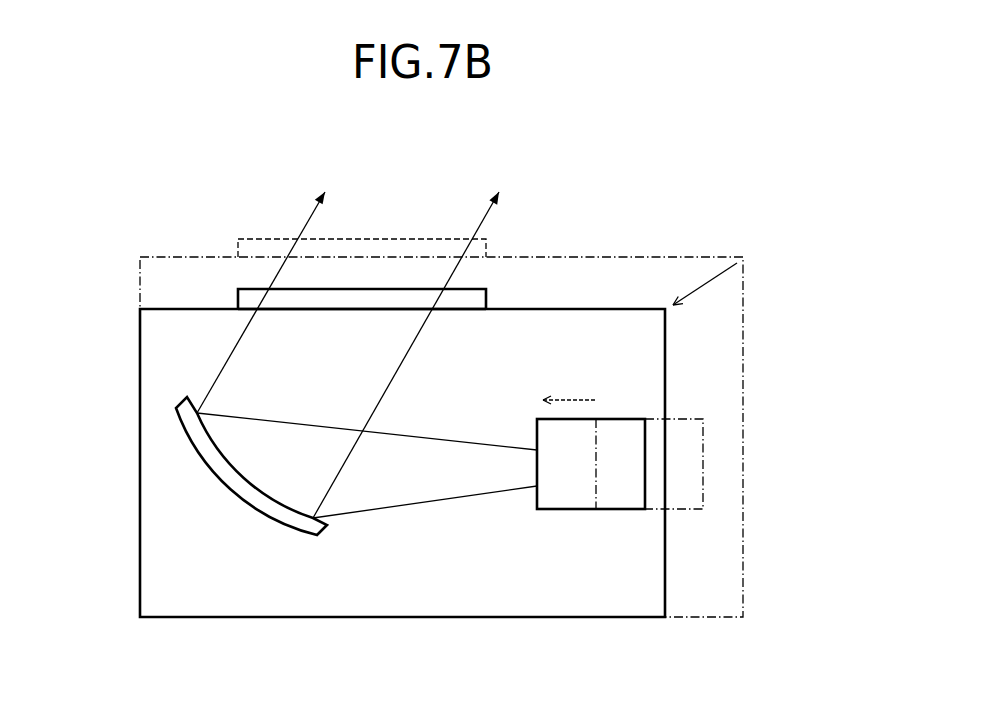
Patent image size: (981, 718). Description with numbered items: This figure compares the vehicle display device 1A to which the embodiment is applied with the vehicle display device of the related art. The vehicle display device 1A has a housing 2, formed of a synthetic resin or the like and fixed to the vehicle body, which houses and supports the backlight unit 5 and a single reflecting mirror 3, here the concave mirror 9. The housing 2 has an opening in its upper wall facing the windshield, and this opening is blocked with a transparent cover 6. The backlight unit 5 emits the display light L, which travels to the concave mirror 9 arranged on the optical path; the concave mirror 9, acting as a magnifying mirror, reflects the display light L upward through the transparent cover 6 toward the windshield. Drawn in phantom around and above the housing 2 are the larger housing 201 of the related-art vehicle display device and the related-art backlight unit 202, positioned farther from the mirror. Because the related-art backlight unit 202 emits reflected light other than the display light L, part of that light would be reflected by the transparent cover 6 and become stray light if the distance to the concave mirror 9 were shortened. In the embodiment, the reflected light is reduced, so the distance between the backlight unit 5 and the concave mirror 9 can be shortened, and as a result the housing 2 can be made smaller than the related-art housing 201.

The vehicle display device 1A is at (652, 281).
The housing 2 is at (605, 307).
The housing 201 is at (567, 255).
The backlight unit 202 is at (705, 445).
The backlight unit 5 is at (556, 510).
The transparent cover 6 is at (247, 312).
The concave mirror 9 is at (186, 466).
The reflecting mirror 3 is at (208, 461).
The display light L is at (237, 343).